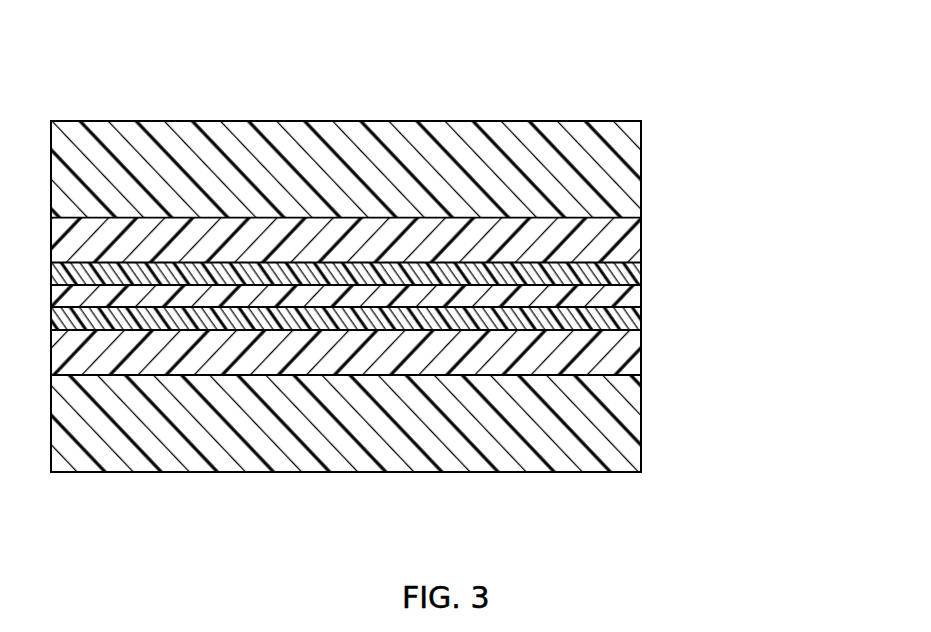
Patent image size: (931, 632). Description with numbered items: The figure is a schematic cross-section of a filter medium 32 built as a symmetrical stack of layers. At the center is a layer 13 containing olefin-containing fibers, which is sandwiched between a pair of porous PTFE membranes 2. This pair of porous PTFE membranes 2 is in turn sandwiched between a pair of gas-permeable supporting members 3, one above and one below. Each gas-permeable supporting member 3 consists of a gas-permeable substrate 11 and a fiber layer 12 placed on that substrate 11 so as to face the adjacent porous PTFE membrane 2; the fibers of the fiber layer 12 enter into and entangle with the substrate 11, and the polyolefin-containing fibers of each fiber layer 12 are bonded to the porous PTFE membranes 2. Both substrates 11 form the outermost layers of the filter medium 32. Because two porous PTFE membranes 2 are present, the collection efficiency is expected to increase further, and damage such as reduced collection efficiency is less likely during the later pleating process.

The filter medium 32 is at (677, 88).
The substrate 11 is at (623, 166).
The fiber layer 12 is at (626, 233).
The porous PTFE membrane 2 is at (642, 268).
The layer containing olefin-containing fibers 13 is at (635, 293).
The gas-permeable supporting member 3 is at (768, 128).